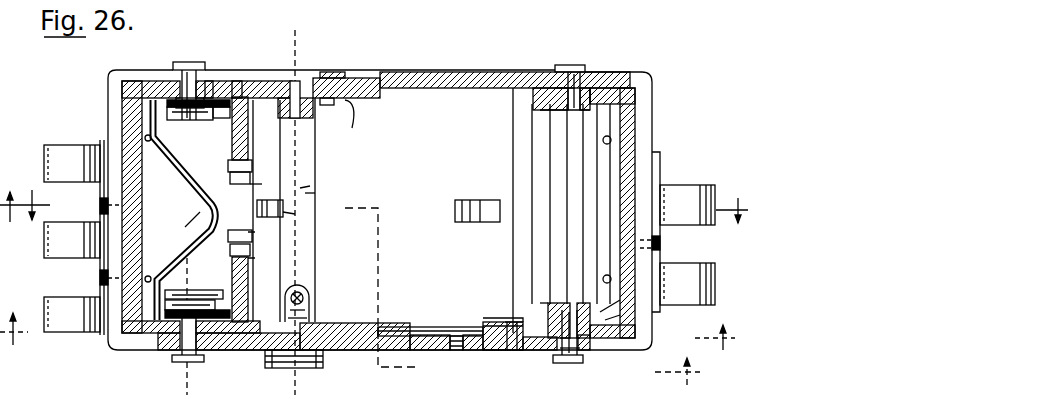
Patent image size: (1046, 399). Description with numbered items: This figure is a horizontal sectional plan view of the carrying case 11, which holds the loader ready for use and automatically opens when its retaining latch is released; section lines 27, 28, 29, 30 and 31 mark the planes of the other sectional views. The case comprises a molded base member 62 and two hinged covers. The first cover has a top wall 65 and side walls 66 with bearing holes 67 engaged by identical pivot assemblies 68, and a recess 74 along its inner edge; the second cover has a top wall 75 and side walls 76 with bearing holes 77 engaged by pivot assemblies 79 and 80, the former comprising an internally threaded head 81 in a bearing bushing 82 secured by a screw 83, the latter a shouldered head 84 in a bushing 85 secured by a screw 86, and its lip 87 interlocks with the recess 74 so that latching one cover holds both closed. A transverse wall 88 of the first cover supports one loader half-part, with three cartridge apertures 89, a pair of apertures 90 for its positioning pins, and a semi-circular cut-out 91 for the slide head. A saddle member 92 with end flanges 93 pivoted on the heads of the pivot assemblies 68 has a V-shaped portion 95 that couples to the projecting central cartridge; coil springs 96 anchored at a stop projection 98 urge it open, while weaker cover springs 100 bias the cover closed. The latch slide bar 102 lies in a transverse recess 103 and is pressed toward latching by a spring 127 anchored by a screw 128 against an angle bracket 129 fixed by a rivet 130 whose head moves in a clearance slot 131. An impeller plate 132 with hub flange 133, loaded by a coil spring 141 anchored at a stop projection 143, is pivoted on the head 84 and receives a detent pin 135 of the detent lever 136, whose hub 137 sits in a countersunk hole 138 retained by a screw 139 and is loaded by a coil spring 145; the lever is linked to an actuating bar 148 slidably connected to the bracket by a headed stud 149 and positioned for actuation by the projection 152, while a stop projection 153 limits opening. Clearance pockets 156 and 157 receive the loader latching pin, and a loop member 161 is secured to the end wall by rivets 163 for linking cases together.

The carrying case 11 is at (82, 76).
The section line 27— 27 is at (350, 311).
The section line 28— 28 is at (375, 200).
The section line 29— 29 is at (285, 40).
The section line 30— 30 is at (179, 270).
The section line 31— 31 is at (367, 341).
The base member 62 is at (457, 68).
The top wall 65 is at (136, 192).
The side walls 66 is at (240, 80).
The bearing holes 67 is at (214, 80).
The pivot assemblies 68 is at (187, 61).
The recess 74 is at (330, 102).
The top wall 75 is at (630, 150).
The side walls 76 is at (615, 86).
The bearing holes 77 is at (593, 90).
The pivot assembly 79 is at (571, 62).
The pivot assembly 80 is at (565, 362).
The internally threaded head 81 is at (560, 110).
The bearing bushing 82 is at (553, 100).
The screw 83 is at (565, 90).
The shouldered internally threaded head 84 is at (563, 300).
The bearing bushing 85 is at (536, 346).
The screw 86 is at (571, 352).
The lip 87 is at (356, 125).
The transverse wall 88 is at (252, 154).
The apertures 89 is at (248, 258).
The apertures 90 is at (256, 182).
The semi-circular cut-out 91 is at (283, 208).
The saddle member 92 is at (159, 139).
The end flanges 93 is at (246, 112).
The V-shaped portion 95 is at (200, 194).
The coil springs 96 is at (206, 123).
The stop projection 98 is at (244, 170).
The coil spring 100 is at (176, 97).
The slide bar 102 is at (312, 186).
The transverse recess 103 is at (316, 193).
The spring 127 is at (400, 327).
The screw 128 is at (472, 342).
The angle bracket 129 is at (302, 298).
The rivet 130 is at (306, 290).
The clearance slot 131 is at (312, 304).
The impeller plate 132 is at (503, 320).
The annular hub flange 133 is at (556, 315).
The detent pin 135 is at (515, 320).
The detent lever 136 is at (500, 322).
The hub 137 is at (501, 350).
The countersunk hole 138 is at (474, 356).
The screw 139 is at (513, 352).
The coil spring 141 is at (607, 306).
The stop projection 143 is at (612, 316).
The coil spring 145 is at (480, 327).
The actuating bar 148 is at (380, 327).
The headed stud 149 is at (303, 317).
The actuating projection 152 is at (138, 336).
The stop projection 153 is at (175, 226).
The clearance pocket 156 is at (284, 215).
The clearance pocket 157 is at (467, 200).
The loop member 161 is at (63, 148).
The rivets 163 is at (100, 205).